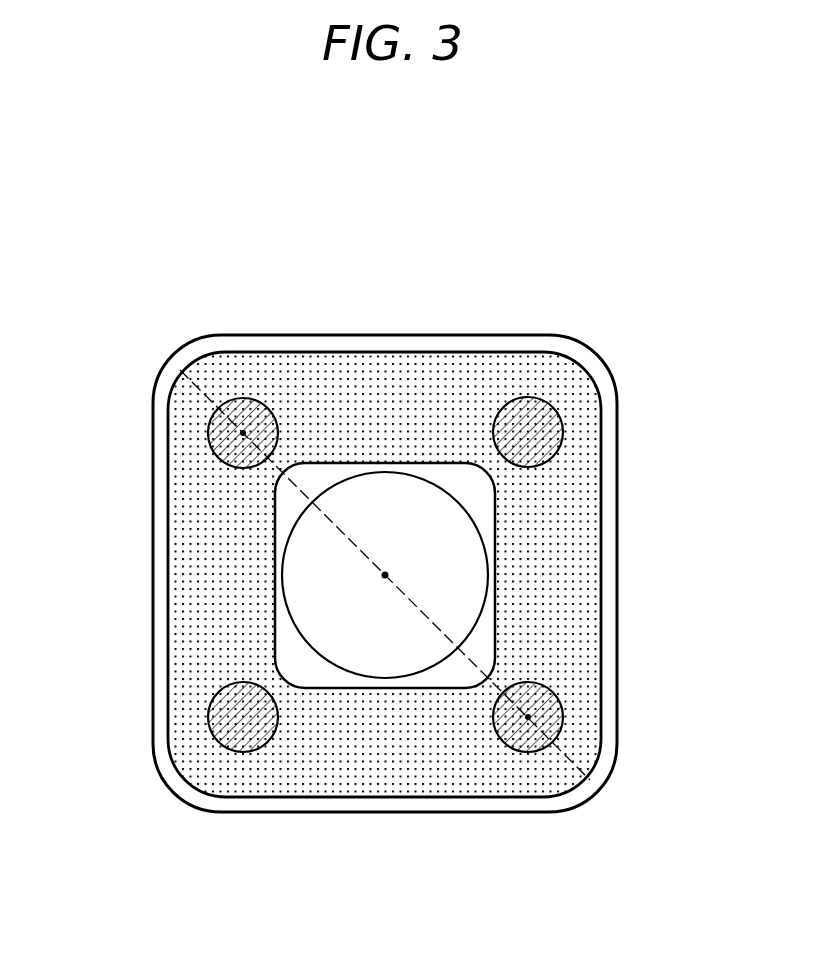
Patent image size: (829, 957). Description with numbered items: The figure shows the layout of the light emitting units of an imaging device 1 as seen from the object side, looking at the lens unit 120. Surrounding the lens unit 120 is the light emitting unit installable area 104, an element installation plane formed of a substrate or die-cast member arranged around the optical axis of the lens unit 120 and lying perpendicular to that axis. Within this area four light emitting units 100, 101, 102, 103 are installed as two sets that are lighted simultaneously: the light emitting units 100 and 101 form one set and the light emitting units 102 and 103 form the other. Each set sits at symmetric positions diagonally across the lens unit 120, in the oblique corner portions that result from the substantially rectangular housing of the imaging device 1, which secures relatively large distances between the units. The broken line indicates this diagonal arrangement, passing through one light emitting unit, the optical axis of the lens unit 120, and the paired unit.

The imaging device 1 is at (537, 815).
The light emitting unit 100 is at (538, 397).
The light emitting unit 101 is at (208, 718).
The light emitting unit 102 is at (208, 433).
The light emitting unit 103 is at (563, 716).
The light emitting unit installable area 104 is at (333, 372).
The lens unit 120 is at (474, 521).